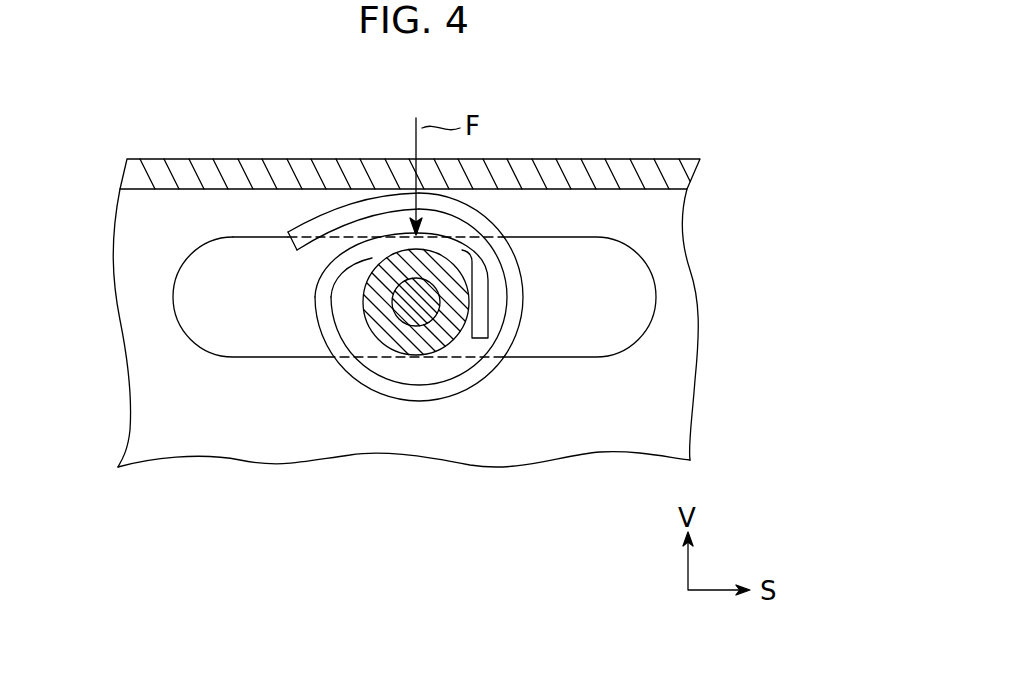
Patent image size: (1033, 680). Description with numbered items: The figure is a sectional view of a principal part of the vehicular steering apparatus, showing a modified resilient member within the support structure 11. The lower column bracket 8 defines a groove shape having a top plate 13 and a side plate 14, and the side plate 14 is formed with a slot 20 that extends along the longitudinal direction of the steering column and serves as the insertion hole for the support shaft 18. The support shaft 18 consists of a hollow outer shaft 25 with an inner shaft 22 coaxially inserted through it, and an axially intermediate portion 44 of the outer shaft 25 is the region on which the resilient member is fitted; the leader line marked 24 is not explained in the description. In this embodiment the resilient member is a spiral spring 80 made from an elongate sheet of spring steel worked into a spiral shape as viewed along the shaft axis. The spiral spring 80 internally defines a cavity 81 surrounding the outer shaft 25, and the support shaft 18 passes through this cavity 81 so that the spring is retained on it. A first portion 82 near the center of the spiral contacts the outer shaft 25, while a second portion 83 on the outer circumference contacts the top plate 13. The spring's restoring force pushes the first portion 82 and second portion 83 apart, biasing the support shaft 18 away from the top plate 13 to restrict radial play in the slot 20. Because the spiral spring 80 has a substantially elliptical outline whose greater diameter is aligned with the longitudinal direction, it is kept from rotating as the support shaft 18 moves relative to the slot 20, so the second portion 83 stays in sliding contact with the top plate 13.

The lower column bracket 8 is at (444, 348).
The support structure 11 is at (444, 286).
The top plate 13 is at (550, 168).
The side plate 14 is at (687, 310).
The support shaft 18 is at (395, 338).
The slot 20 is at (560, 338).
The inner shaft 22 is at (372, 317).
The conductor 24 is at (405, 285).
The outer shaft 25 is at (403, 383).
The axially intermediate portion 44 is at (378, 335).
The spiral spring 80 is at (384, 240).
The cavity 81 is at (347, 297).
The first portion 82 is at (435, 245).
The second portion 83 is at (398, 194).